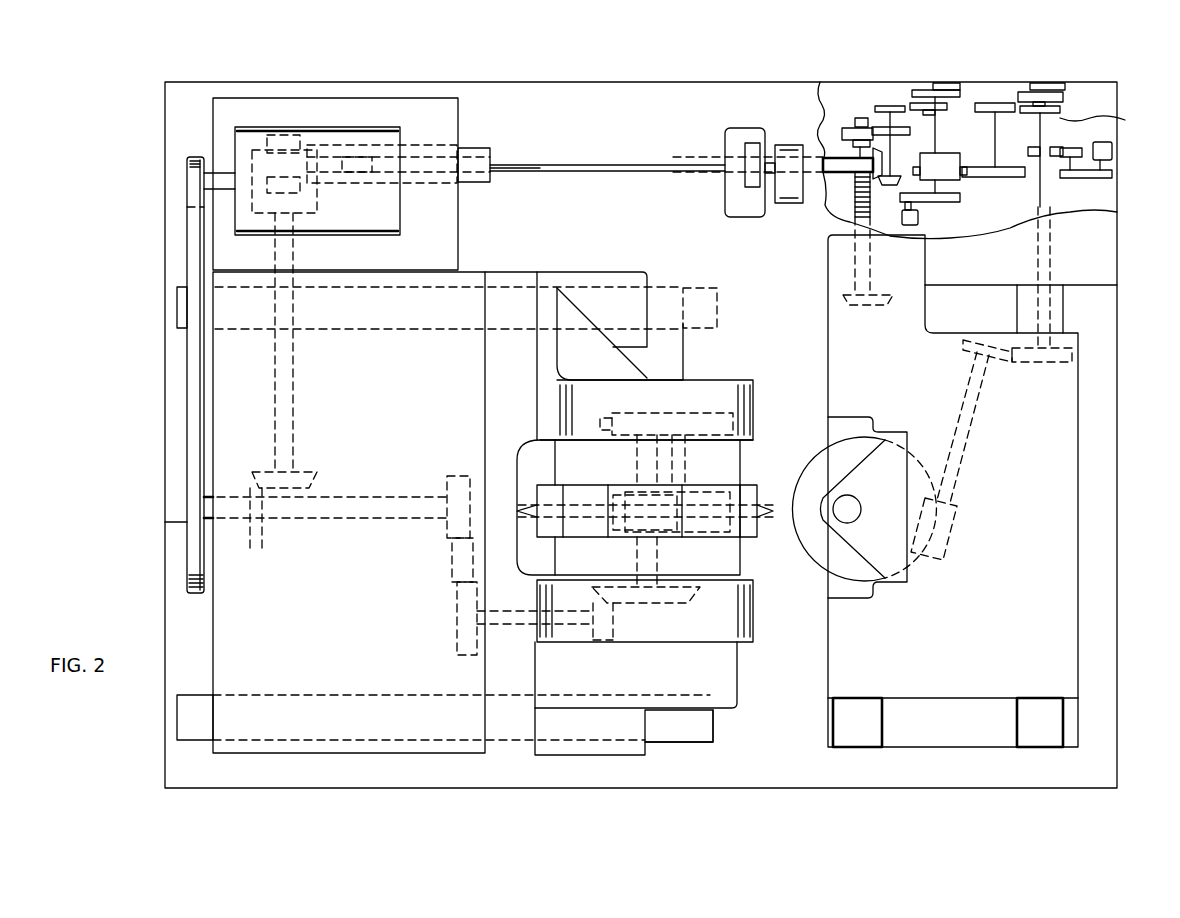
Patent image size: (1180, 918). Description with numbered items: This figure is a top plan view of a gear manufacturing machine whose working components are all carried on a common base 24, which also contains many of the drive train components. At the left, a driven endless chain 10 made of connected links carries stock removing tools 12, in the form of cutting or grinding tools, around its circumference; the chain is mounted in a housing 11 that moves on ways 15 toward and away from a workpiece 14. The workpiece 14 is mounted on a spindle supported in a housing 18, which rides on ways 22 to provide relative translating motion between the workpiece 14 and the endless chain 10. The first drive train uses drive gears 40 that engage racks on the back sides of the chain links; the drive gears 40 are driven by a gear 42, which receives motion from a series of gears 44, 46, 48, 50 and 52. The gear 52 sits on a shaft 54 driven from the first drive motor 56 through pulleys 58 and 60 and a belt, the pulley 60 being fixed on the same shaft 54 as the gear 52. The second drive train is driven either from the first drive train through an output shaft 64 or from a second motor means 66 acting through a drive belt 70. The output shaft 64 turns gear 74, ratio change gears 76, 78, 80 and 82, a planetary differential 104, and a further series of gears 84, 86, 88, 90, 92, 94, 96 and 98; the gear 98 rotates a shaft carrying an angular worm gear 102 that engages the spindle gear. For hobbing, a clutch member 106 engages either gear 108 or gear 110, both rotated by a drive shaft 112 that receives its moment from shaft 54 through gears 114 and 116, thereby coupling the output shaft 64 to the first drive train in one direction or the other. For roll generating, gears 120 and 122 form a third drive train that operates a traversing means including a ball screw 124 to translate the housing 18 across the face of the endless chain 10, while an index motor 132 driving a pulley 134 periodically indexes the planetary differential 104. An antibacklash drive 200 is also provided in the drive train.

The endless chain 10 is at (770, 482).
The housing 11 is at (343, 603).
The stock removing tools 12 is at (768, 525).
The workpieces 14 is at (808, 573).
The ways 15 is at (660, 286).
The housing 18 is at (968, 671).
The ways 22 is at (885, 722).
The base 24 is at (780, 764).
The drive gears 40 is at (706, 408).
The gear 42 is at (620, 535).
The gear 44 is at (693, 596).
The gear 46 is at (600, 640).
The gear 48 is at (457, 630).
The gear 50 is at (452, 565).
The gear 52 is at (450, 478).
The shaft 54 is at (410, 518).
The first drive motor 56 is at (398, 218).
The pulley 58 is at (190, 165).
The pulley 60 is at (170, 522).
The output shaft 64 is at (626, 160).
The second motor means 66 is at (792, 203).
The drive belt 70 is at (748, 180).
The gear 74 is at (878, 212).
The ratio change gear 76 is at (878, 106).
The ratio change gear 78 is at (892, 110).
The ratio change gear 80 is at (920, 92).
The ratio change gear 82 is at (950, 88).
The gear 84 is at (962, 180).
The gear 86 is at (1000, 178).
The gear 88 is at (997, 103).
The gear 90 is at (1117, 120).
The gear 92 is at (1035, 85).
The gear 94 is at (1062, 95).
The gear 96 is at (1043, 362).
The gear 98 is at (966, 345).
The angular worm gear 102 is at (948, 545).
The planetary differential 104 is at (966, 154).
The clutch member 106 is at (280, 130).
The gear 108 is at (260, 126).
The gear 110 is at (315, 130).
The drive shaft 112 is at (296, 247).
The gear 114 is at (262, 546).
The gear 116 is at (312, 478).
The gear 120 is at (880, 128).
The gear 122 is at (822, 88).
The ball screw 124 is at (840, 150).
The index motor 132 is at (895, 215).
The pulley 134 is at (920, 204).
The antibacklash drive 200 is at (1112, 152).